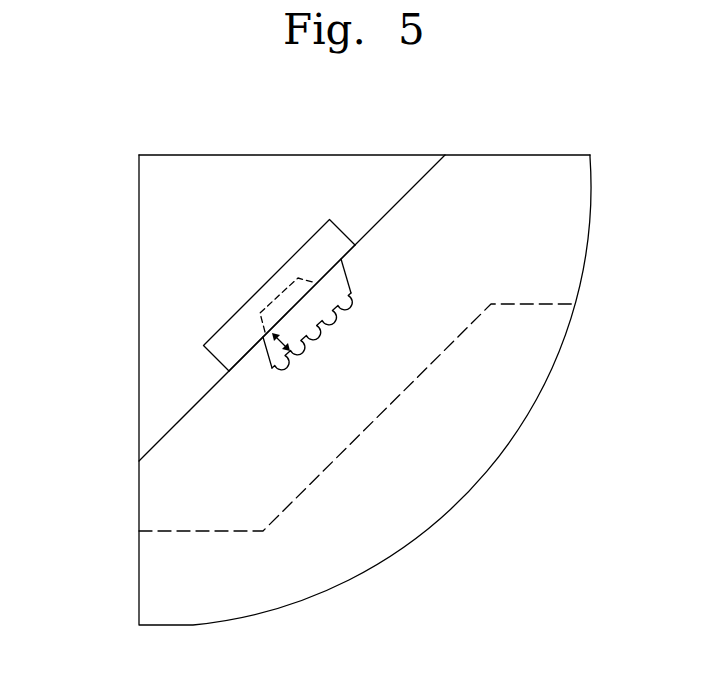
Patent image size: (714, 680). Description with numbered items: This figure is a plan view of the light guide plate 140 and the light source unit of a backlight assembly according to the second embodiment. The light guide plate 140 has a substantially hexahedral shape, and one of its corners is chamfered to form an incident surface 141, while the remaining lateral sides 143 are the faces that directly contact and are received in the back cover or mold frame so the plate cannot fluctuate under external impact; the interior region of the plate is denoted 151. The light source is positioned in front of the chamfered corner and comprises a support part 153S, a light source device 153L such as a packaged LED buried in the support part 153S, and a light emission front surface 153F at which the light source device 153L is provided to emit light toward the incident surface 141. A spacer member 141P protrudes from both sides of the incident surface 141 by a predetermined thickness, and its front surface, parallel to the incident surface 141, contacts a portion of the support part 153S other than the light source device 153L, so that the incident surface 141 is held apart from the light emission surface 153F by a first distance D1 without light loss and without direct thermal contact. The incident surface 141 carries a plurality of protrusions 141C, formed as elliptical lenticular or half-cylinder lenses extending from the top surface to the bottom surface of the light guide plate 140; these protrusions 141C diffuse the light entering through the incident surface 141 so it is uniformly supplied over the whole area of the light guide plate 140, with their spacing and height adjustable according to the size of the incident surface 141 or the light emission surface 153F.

The light guide plate 140 is at (139, 549).
The lateral sides 143 is at (515, 150).
The inner region 151 is at (162, 355).
The spacer member 141P is at (200, 417).
The incident surface 141 is at (307, 336).
The protrusions 141C is at (343, 297).
The first distance D1 is at (276, 357).
The support part 153S is at (267, 295).
The light emission front surface 153F is at (285, 315).
The light source device 153L is at (290, 284).